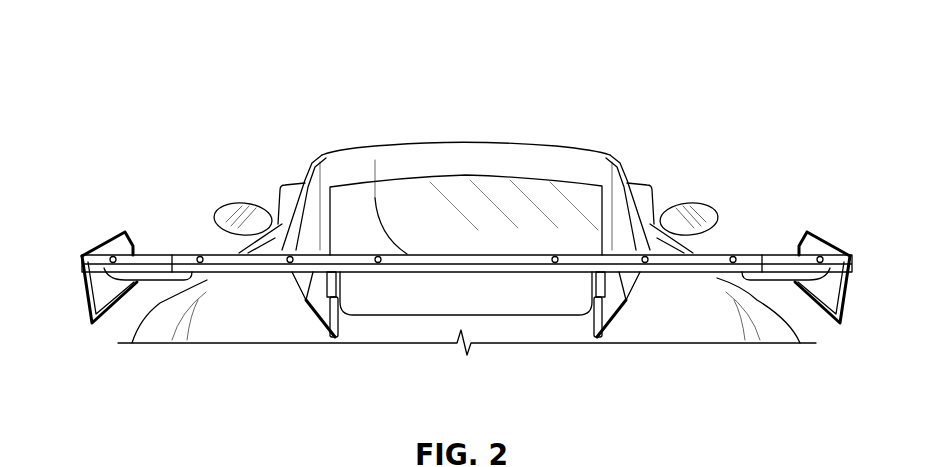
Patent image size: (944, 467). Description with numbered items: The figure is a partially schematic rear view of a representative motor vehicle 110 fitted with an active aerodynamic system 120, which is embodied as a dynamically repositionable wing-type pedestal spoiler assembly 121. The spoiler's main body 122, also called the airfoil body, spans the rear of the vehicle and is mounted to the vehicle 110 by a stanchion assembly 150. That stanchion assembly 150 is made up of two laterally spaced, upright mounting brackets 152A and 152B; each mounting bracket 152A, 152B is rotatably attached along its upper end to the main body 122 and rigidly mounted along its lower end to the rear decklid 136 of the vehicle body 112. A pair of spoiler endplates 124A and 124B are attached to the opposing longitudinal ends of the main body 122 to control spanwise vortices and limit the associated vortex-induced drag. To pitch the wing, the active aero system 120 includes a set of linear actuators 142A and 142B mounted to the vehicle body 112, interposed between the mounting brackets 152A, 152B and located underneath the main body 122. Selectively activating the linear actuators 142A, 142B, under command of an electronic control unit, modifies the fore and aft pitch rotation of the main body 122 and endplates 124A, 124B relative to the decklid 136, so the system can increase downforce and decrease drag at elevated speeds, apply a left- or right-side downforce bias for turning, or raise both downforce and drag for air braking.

The motor vehicle 110 is at (220, 47).
The vehicle body 112 is at (613, 151).
The active aerodynamic system 120 is at (566, 185).
The pedestal spoiler assembly 121 is at (212, 255).
The main body 122 is at (375, 198).
The spoiler endplate 124A is at (100, 243).
The spoiler endplate 124B is at (832, 243).
The rear decklid 136 is at (414, 332).
The linear actuator 142A is at (343, 330).
The linear actuator 142B is at (588, 328).
The stanchion assembly 150 is at (648, 304).
The mounting bracket 152A is at (314, 330).
The mounting bracket 152B is at (615, 328).